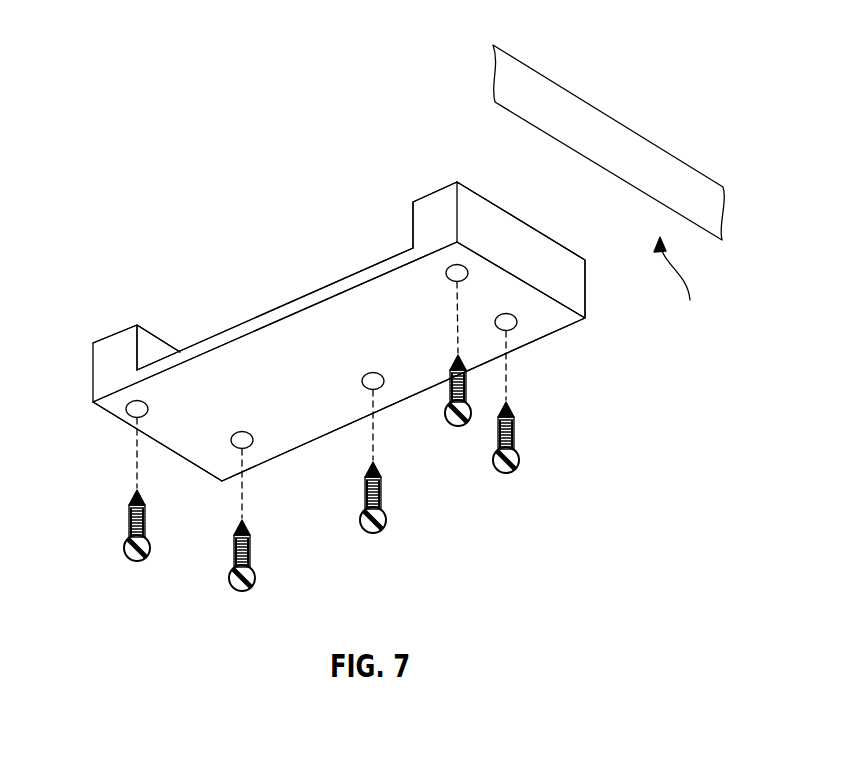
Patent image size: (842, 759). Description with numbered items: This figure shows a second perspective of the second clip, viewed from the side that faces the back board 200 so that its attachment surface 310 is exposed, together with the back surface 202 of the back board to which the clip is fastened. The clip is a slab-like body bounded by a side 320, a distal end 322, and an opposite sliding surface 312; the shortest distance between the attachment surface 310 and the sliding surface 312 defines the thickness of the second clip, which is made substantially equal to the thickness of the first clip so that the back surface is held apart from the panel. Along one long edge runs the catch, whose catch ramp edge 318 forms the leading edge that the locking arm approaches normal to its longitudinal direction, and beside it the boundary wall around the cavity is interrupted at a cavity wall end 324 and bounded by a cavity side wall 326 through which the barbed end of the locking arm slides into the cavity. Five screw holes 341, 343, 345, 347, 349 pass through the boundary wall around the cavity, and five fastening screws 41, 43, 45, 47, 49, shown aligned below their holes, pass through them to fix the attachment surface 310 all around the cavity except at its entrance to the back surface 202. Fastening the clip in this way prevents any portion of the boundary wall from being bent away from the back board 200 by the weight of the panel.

The back board 200 is at (575, 110).
The back surface 202 is at (682, 288).
The second clip attachment surface 310 is at (495, 203).
The second clip sliding surface 312 is at (203, 453).
The second clip catch ramp edge 318 is at (280, 314).
The second clip side 320 is at (433, 388).
The second clip distal end 322 is at (548, 248).
The second clip cavity wall end 324 is at (425, 212).
The second clip cavity side wall 326 is at (147, 348).
The screw clip fastener hole 341 is at (510, 331).
The screw clip fastener hole 343 is at (378, 391).
The screw clip fastener hole 345 is at (245, 449).
The screw clip fastener hole 347 is at (130, 420).
The screw clip fastener hole 349 is at (455, 281).
The second clip fastening screw 41 is at (515, 430).
The second clip fastening screw 43 is at (383, 493).
The second clip fastening screw 45 is at (250, 553).
The second clip fastening screw 47 is at (128, 533).
The second clip fastening screw 49 is at (450, 372).